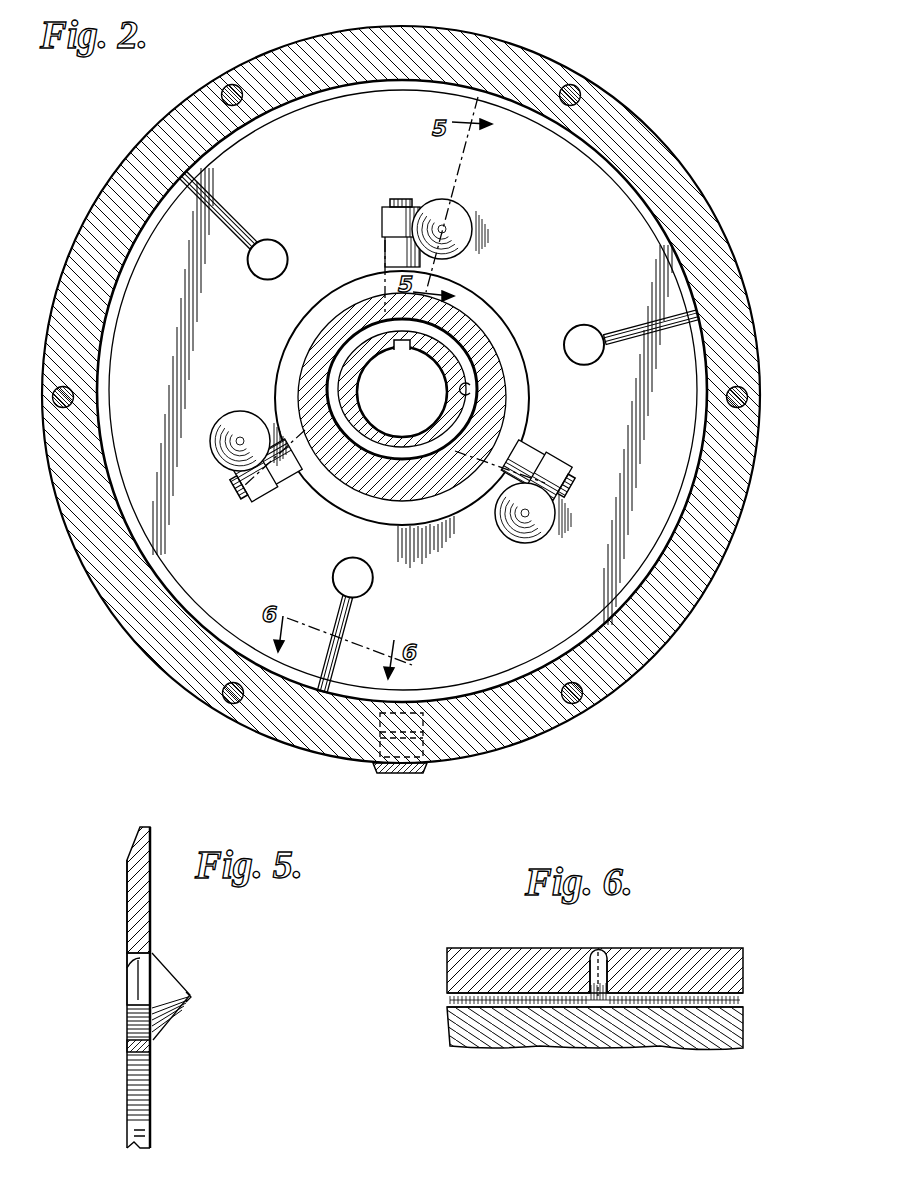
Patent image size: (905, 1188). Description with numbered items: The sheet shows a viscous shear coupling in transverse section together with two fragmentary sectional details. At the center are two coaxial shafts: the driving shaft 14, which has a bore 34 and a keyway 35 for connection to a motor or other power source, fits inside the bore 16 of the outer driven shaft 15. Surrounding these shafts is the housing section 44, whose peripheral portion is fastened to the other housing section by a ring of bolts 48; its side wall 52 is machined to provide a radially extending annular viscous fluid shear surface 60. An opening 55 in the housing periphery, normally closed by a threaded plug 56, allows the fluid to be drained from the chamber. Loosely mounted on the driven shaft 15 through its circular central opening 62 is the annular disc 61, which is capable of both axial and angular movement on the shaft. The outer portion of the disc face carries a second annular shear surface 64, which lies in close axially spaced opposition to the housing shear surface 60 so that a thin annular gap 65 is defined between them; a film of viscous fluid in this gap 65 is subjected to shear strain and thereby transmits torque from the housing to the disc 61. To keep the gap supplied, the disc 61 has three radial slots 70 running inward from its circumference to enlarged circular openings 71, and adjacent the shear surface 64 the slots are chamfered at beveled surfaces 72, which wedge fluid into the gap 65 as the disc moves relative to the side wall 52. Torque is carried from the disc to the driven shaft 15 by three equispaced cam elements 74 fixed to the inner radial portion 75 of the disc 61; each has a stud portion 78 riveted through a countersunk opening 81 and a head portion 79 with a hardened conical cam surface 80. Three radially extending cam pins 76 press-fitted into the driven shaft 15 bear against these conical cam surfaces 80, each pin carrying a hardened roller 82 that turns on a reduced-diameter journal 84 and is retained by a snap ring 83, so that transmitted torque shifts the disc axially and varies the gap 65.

In FIG. 2, the driving shaft 14 is at (350, 372).
In FIG. 2, the driven shaft 15 is at (482, 340).
In FIG. 2, the bore 16 is at (474, 389).
In FIG. 2, the bore 34 is at (390, 440).
In FIG. 2, the keyway 35 is at (402, 348).
In FIG. 2, the housing section 44 is at (140, 165).
In FIG. 2, the bolts 48 is at (226, 86).
In FIG. 6, the side wall 52 is at (553, 1035).
In FIG. 2, the opening 55 is at (382, 722).
In FIG. 2, the threaded plug 56 is at (403, 774).
In FIG. 6, the viscous fluid shear surface 60 is at (742, 1006).
In FIG. 2, the annular disc 61 is at (572, 211).
In FIG. 5, the annular disc 61 is at (130, 902).
In FIG. 6, the annular disc 61 is at (507, 948).
In FIG. 2, the central opening 62 is at (480, 302).
In FIG. 2, the viscous fluid shear surface 64 is at (634, 232).
In FIG. 5, the viscous fluid shear surface 64 is at (152, 910).
In FIG. 6, the viscous fluid shear surface 64 is at (742, 996).
In FIG. 6, the gap 65 is at (452, 1000).
In FIG. 2, the radial slots 70 is at (232, 225).
In FIG. 6, the radial slots 70 is at (600, 952).
In FIG. 2, the circular openings 71 is at (284, 250).
In FIG. 2, the beveled surfaces 72 is at (212, 195).
In FIG. 6, the beveled surfaces 72 is at (590, 988).
In FIG. 2, the cam elements 74 is at (465, 215).
In FIG. 5, the cam elements 74 is at (172, 980).
In FIG. 2, the inner radial portion 75 is at (432, 557).
In FIG. 5, the inner radial portion 75 is at (137, 1030).
In FIG. 2, the cam pins 76 is at (385, 252).
In FIG. 5, the stud portion 78 is at (138, 986).
In FIG. 5, the head portion 79 is at (193, 996).
In FIG. 5, the conical cam surface 80 is at (176, 1020).
In FIG. 5, the countersunk opening 81 is at (134, 963).
In FIG. 2, the roller 82 is at (382, 222).
In FIG. 2, the snap ring 83 is at (390, 205).
In FIG. 2, the journal 84 is at (400, 206).